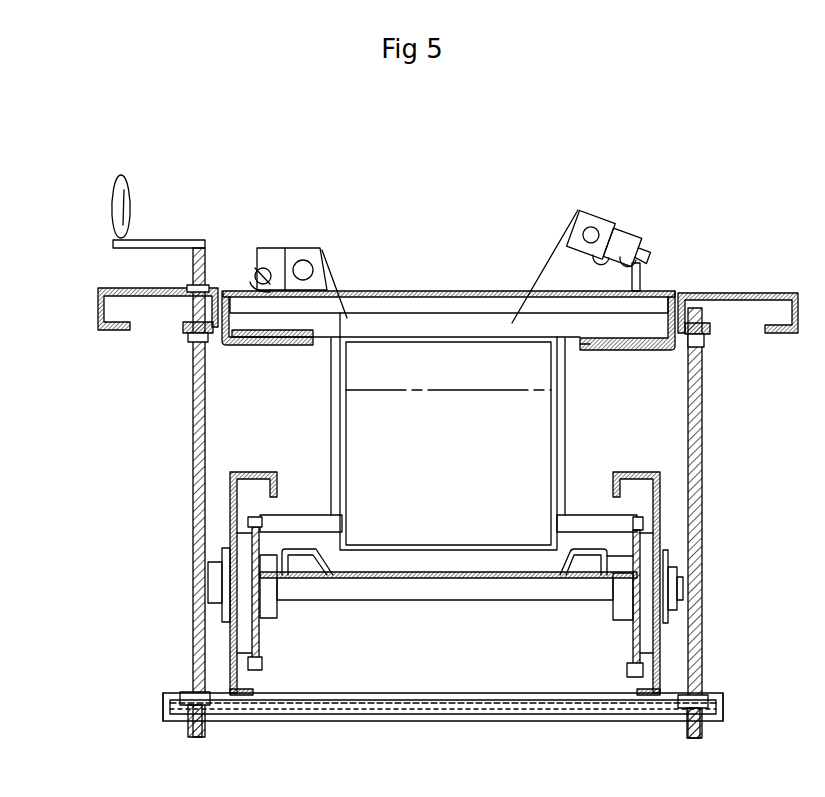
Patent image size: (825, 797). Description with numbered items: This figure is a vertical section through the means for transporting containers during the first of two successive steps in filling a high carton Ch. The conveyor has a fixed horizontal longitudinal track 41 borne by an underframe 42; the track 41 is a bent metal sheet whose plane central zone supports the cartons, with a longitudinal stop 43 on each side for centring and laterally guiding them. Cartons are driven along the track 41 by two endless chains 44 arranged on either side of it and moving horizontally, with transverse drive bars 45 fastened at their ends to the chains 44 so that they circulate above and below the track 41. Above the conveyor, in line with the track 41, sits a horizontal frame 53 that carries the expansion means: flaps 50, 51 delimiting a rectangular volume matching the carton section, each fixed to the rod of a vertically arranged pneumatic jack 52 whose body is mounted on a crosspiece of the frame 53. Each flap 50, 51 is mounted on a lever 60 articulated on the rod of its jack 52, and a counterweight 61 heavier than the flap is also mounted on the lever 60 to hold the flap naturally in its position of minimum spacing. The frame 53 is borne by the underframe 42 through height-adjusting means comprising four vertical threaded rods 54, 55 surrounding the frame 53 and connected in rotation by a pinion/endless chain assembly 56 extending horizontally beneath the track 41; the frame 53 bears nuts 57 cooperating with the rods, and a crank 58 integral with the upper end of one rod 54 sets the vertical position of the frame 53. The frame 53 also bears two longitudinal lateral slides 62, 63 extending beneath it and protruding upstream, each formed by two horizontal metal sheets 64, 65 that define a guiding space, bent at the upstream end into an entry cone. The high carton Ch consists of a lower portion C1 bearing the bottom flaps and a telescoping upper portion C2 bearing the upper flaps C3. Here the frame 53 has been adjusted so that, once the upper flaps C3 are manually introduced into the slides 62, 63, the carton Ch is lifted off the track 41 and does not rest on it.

The track 41 is at (423, 603).
The underframe 42 is at (665, 672).
The longitudinal stop 43 is at (303, 553).
The endless chain 44 is at (633, 643).
The transverse drive bar 45 is at (598, 522).
The flap 50 is at (338, 278).
The flap 51 is at (527, 290).
The pneumatic jack 52 is at (640, 283).
The horizontal frame 53 is at (390, 290).
The vertical threaded rod 54 is at (191, 498).
The vertical threaded rod 55 is at (702, 455).
The pinion/endless chain assembly 56 is at (333, 721).
The nut 57 is at (183, 715).
The crank 58 is at (118, 205).
The lever 60 is at (624, 238).
The counterweight 61 is at (602, 225).
The longitudinal lateral slide 62 is at (238, 351).
The longitudinal lateral slide 63 is at (640, 358).
The horizontal metal sheet 64 is at (262, 330).
The horizontal metal sheet 65 is at (290, 348).
The lower portion C1 is at (351, 496).
The upper portion C2 is at (344, 382).
The upper flaps C3 is at (350, 318).
The high carton Ch is at (530, 455).